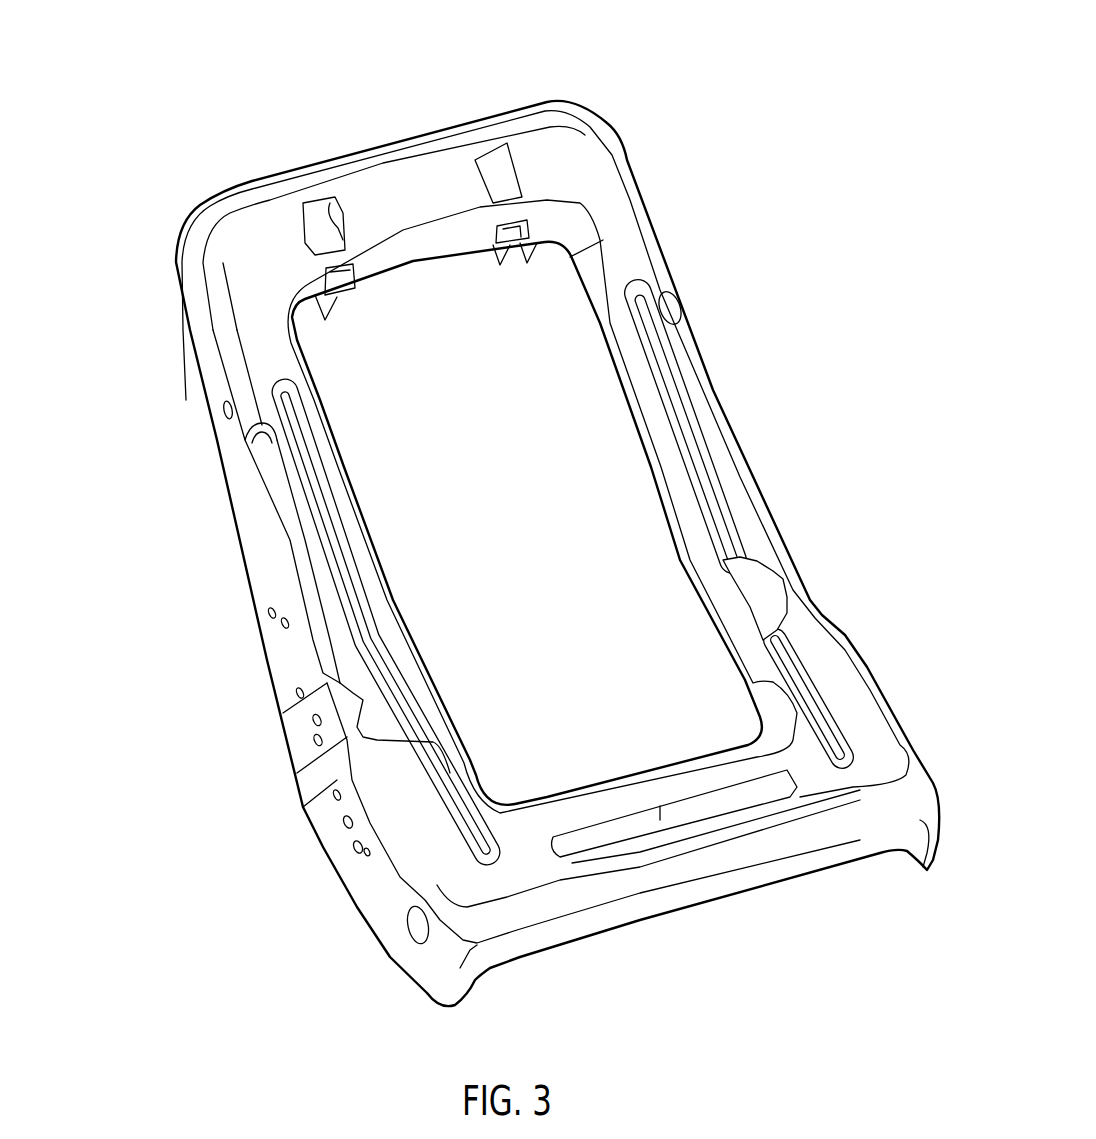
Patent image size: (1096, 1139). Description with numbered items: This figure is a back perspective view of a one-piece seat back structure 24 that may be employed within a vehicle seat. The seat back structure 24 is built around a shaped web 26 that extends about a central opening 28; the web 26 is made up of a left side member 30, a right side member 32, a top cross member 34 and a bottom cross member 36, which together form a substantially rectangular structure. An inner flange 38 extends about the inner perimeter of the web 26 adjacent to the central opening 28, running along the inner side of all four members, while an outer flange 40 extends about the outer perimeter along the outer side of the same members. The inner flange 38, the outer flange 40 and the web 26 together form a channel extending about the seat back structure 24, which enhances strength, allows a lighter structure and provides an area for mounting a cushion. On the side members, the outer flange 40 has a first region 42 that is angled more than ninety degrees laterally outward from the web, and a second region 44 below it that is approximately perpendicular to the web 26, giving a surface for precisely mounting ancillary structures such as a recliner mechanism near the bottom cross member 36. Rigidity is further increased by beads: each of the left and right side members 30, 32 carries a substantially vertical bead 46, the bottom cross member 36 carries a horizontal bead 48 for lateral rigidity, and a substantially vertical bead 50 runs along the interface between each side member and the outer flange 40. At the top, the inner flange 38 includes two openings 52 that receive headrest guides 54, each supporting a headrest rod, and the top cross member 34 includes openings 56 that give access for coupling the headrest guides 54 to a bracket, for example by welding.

The one-piece seat back structure 24 is at (771, 148).
The shaped web 26 is at (258, 284).
The central opening 28 is at (559, 440).
The left side member 30 is at (253, 333).
The right side member 32 is at (613, 213).
The top cross member 34 is at (413, 157).
The bottom cross member 36 is at (800, 767).
The inner flange 38 is at (657, 480).
The outer flange 40 is at (200, 415).
The first region 42 is at (257, 543).
The second region 44 is at (380, 883).
The substantially vertical bead 46 is at (353, 597).
The horizontal bead 48 is at (640, 827).
The substantially vertical bead 50 is at (260, 467).
The openings 52 is at (330, 290).
The headrest guides 54 is at (312, 328).
The openings 56 is at (327, 200).